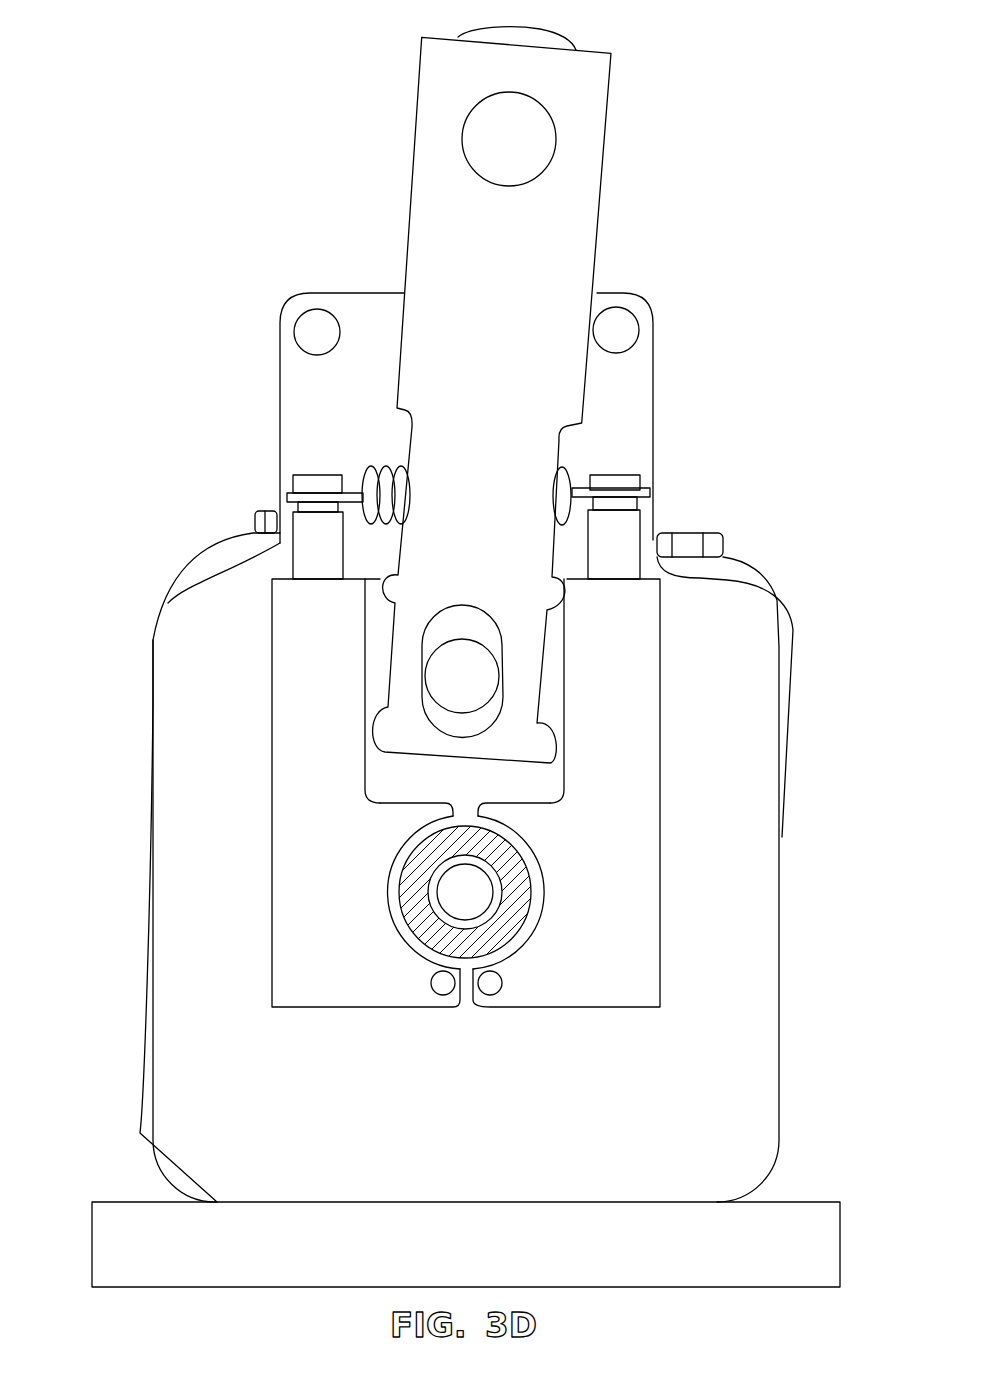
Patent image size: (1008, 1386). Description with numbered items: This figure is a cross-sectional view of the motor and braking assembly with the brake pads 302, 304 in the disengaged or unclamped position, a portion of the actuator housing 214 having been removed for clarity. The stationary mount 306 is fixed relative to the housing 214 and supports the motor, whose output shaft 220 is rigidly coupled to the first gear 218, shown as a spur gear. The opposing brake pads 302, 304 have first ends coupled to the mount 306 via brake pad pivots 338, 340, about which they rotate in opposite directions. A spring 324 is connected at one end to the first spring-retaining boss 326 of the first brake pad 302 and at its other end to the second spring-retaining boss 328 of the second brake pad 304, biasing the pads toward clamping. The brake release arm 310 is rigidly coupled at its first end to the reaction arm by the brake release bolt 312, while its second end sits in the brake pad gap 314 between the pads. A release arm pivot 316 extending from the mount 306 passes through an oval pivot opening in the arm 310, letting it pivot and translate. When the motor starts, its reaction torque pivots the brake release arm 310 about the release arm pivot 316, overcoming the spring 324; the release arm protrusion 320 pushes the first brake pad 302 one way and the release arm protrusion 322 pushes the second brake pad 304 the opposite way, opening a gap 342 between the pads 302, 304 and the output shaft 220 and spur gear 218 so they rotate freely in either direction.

The brake release arm 310 is at (533, 65).
The brake release bolt 312 is at (495, 143).
The release arm protrusion 320 is at (560, 597).
The release arm pivot 316 is at (477, 695).
The release arm protrusion 322 is at (393, 742).
The brake pad gap 314 is at (545, 780).
The spring 324 is at (372, 468).
The second spring-retaining boss 328 is at (318, 533).
The first spring-retaining boss 326 is at (617, 533).
The stationary mount 306 is at (180, 622).
The brake pad 304 is at (307, 920).
The brake pad 302 is at (630, 940).
The gap 342 is at (403, 853).
The output shaft 220 is at (467, 900).
The first gear 218 is at (512, 920).
The brake pad pivot 340 is at (442, 987).
The brake pad pivot 338 is at (493, 987).
The actuator housing 214 is at (840, 1252).